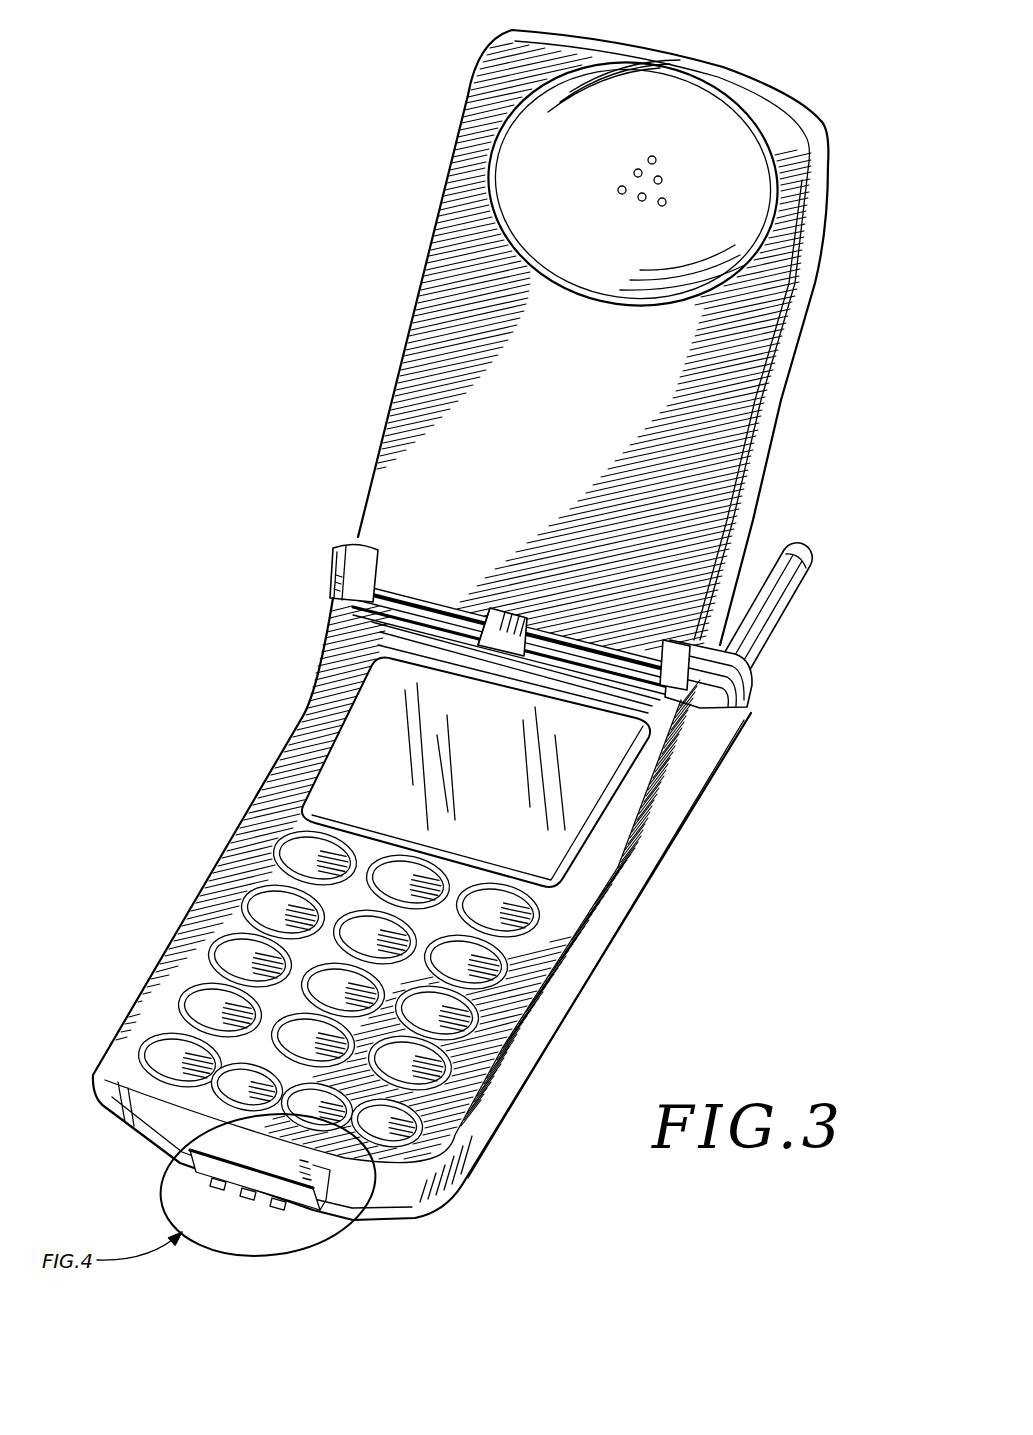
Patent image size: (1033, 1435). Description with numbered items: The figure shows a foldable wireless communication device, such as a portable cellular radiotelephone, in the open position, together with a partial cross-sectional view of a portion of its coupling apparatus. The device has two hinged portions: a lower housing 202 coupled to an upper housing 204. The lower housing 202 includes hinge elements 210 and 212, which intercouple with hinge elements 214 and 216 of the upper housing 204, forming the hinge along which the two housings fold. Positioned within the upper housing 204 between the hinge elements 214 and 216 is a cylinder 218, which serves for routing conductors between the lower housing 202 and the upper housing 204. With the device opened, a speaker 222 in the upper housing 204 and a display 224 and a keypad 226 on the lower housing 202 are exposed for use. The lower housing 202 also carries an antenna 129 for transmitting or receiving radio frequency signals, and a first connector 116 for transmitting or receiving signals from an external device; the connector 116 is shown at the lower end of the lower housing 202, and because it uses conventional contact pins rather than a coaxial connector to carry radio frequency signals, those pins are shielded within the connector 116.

The upper housing 204 is at (430, 240).
The speaker 222 is at (725, 220).
The cylinder 218 is at (495, 630).
The hinge element 210 is at (343, 560).
The hinge element 214 is at (392, 603).
The antenna 129 is at (795, 548).
The hinge element 212 is at (733, 727).
The hinge element 216 is at (680, 700).
The lower housing 202 is at (470, 1125).
The display 224 is at (580, 817).
The keypad 226 is at (547, 960).
The first connector 116 is at (300, 1208).